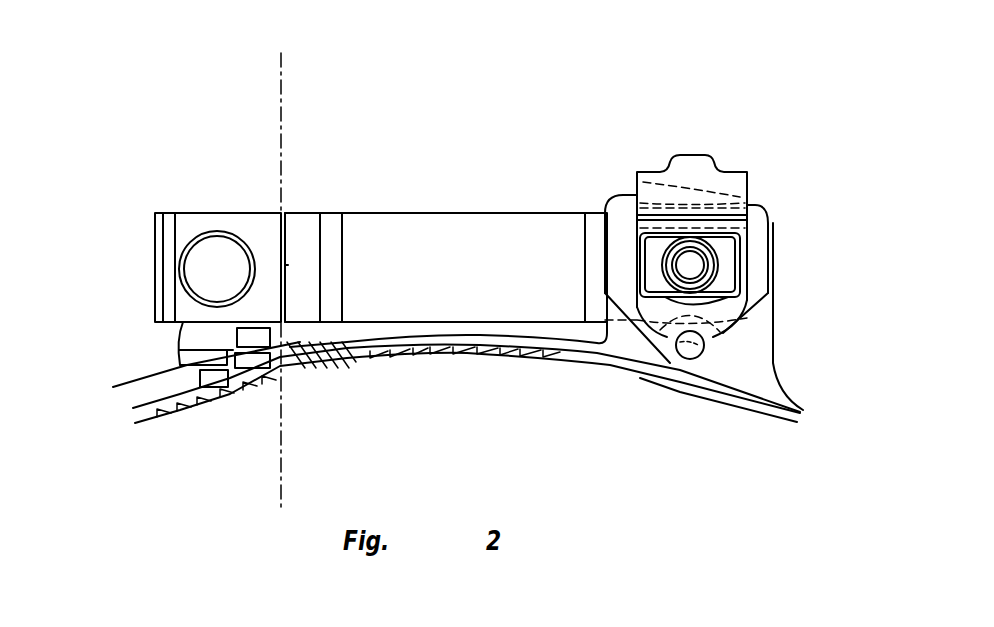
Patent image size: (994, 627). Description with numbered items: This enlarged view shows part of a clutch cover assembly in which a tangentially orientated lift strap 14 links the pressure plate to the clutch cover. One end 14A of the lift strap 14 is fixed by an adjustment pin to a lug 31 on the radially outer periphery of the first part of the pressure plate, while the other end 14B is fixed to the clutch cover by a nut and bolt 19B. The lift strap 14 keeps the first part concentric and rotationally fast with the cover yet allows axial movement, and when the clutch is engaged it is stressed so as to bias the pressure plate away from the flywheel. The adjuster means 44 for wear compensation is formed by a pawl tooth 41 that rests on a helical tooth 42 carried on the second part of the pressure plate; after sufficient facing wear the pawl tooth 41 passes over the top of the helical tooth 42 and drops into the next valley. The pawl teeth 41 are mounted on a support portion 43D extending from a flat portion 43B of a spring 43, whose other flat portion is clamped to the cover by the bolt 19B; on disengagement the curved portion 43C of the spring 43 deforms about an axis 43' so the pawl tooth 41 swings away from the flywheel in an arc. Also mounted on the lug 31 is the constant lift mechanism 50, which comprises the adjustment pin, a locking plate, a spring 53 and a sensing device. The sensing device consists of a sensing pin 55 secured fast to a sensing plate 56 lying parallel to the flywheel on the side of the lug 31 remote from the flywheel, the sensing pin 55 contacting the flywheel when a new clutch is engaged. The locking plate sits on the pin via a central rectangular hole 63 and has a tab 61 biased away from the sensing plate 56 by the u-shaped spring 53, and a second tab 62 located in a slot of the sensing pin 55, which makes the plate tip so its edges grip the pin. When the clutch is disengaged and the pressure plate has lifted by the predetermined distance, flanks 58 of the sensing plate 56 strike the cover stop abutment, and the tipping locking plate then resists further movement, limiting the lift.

The lift strap 14 is at (403, 213).
The one end of lift strap 14A is at (539, 210).
The other end of lift strap 14B is at (302, 213).
The bolt 19B is at (182, 291).
The lug 31 is at (616, 200).
The pawl tooth 41 is at (350, 363).
The helical tooth 42 is at (473, 360).
The spring 43 is at (173, 267).
The axis 43' is at (237, 274).
The flat portion of spring 43B is at (183, 338).
The curved portion of spring 43C is at (285, 265).
The support portion of spring 43D is at (113, 387).
The adjuster means 44 is at (285, 352).
The constant lift mechanism 50 is at (683, 118).
The spring 53 is at (705, 173).
The sensing pin 55 is at (678, 358).
The sensing plate 56 is at (763, 202).
The flanks of sensing plate 58 is at (622, 262).
The tab of locking plate 61 is at (770, 223).
The second tab of locking plate 62 is at (723, 333).
The central rectangular hole 63 is at (740, 263).